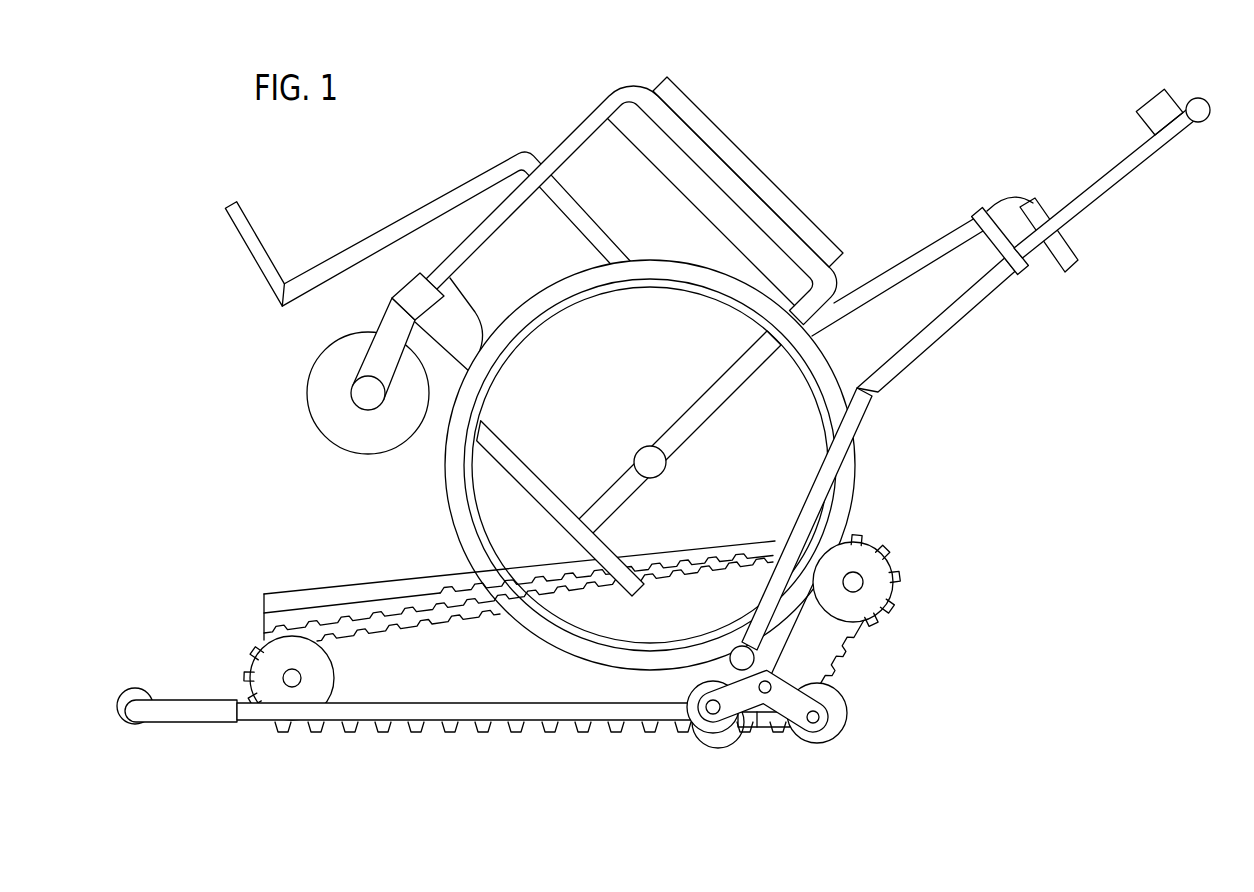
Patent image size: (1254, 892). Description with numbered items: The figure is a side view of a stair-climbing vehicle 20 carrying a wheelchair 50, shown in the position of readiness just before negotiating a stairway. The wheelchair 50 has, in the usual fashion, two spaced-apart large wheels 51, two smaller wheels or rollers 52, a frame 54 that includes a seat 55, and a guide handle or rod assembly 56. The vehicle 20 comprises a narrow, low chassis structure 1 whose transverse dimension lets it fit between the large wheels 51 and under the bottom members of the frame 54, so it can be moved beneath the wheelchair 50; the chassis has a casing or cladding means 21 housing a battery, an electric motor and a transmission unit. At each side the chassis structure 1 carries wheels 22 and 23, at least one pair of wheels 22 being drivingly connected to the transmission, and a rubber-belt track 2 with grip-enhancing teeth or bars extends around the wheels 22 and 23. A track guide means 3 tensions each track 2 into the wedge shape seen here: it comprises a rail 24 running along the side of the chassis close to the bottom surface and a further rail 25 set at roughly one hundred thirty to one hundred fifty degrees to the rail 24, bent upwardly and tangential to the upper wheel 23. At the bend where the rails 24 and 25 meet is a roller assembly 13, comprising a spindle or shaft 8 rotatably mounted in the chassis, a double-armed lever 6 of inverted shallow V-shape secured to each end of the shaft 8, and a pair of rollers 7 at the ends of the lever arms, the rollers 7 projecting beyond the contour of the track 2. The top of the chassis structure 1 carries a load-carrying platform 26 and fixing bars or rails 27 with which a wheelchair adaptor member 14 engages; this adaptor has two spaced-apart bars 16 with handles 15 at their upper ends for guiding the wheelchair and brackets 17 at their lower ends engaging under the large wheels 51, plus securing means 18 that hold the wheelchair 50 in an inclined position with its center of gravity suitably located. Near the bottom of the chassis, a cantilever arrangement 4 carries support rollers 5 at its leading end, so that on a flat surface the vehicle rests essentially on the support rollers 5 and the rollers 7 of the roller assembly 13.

The chassis structure 1 is at (494, 596).
The track 2 is at (403, 610).
The track guide means 3 is at (758, 718).
The extension or cantilever arrangement 4 is at (187, 702).
The support roller 5 is at (132, 692).
The double-armed lever 6 is at (810, 706).
The roller 7 is at (695, 699).
The spindle or shaft 8 is at (769, 683).
The roller assembly 13 is at (785, 695).
The wheelchair adaptor member 14 is at (780, 501).
The handle 15 is at (1198, 108).
The rod or bar 16 is at (860, 410).
The bracket 17 is at (733, 650).
The securing means 18 is at (1038, 212).
The vehicle 20 is at (534, 646).
The casing or cladding means 21 is at (264, 623).
The wheel 22 is at (270, 690).
The wheel 23 is at (884, 590).
The rail 24 is at (648, 714).
The rail 25 is at (845, 654).
The load-carrying platform 26 is at (296, 610).
The fixing bars or rails 27 is at (438, 582).
The wheelchair 50 is at (702, 365).
The large wheel 51 is at (447, 442).
The smaller wheel or roller 52 is at (310, 394).
The frame 54 is at (538, 478).
The seat 55 is at (592, 222).
The guide handle or rod assembly 56 is at (935, 246).